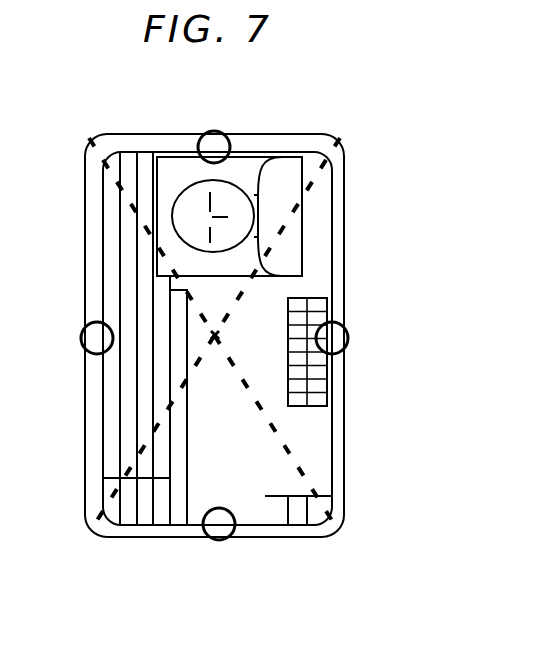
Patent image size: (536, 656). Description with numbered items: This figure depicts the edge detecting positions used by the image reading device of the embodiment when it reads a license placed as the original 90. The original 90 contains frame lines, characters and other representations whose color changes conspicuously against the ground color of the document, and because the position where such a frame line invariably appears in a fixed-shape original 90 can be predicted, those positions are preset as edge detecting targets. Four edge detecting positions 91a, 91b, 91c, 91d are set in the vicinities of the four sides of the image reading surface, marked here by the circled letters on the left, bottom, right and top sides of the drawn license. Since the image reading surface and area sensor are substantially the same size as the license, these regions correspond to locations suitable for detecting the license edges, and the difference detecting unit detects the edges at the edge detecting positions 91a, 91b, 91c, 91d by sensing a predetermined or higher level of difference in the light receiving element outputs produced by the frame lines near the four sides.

The original 90 is at (306, 128).
The edge detecting position 91a is at (96, 355).
The edge detecting position 91b is at (219, 541).
The edge detecting position 91c is at (332, 355).
The edge detecting position 91d is at (214, 131).